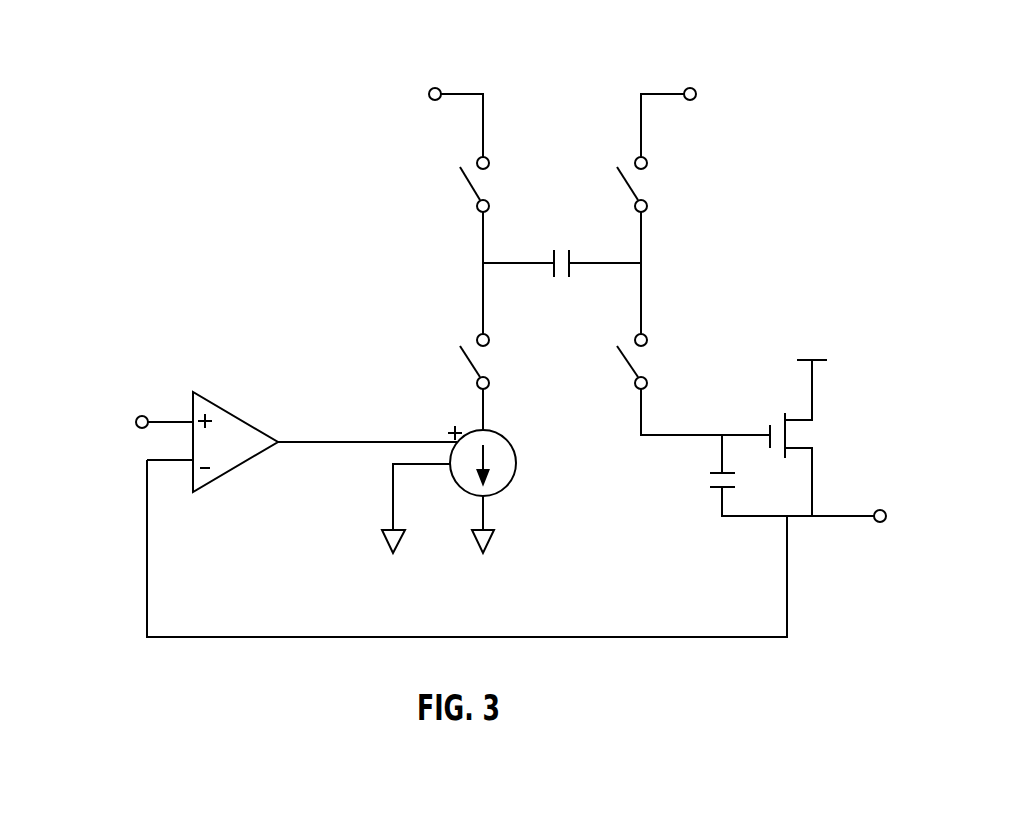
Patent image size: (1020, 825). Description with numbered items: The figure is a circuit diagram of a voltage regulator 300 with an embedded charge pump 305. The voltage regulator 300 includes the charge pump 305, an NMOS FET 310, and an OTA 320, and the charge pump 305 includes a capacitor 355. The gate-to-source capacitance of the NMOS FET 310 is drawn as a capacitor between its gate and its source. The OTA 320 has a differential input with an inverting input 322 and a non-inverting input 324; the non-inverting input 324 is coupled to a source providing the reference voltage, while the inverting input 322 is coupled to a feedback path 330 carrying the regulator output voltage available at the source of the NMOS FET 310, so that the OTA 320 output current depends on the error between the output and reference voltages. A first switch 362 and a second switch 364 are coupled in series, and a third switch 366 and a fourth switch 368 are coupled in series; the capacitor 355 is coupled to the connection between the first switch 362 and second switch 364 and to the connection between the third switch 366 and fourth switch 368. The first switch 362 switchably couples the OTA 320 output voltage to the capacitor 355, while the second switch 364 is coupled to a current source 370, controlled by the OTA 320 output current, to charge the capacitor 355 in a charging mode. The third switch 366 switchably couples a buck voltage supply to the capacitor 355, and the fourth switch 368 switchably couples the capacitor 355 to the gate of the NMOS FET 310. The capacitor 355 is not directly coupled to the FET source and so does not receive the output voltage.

The voltage regulator 300 is at (253, 48).
The first switch 362 is at (465, 186).
The second switch 364 is at (468, 366).
The third switch 366 is at (638, 181).
The fourth switch 368 is at (635, 359).
The charge pump 305 is at (642, 226).
The capacitor 355 is at (572, 272).
The current source 370 is at (502, 436).
The NMOS FET 310 is at (788, 438).
The OTA 320 is at (237, 410).
The non-inverting input 324 is at (135, 419).
The inverting input 322 is at (163, 460).
The feedback path 330 is at (573, 637).